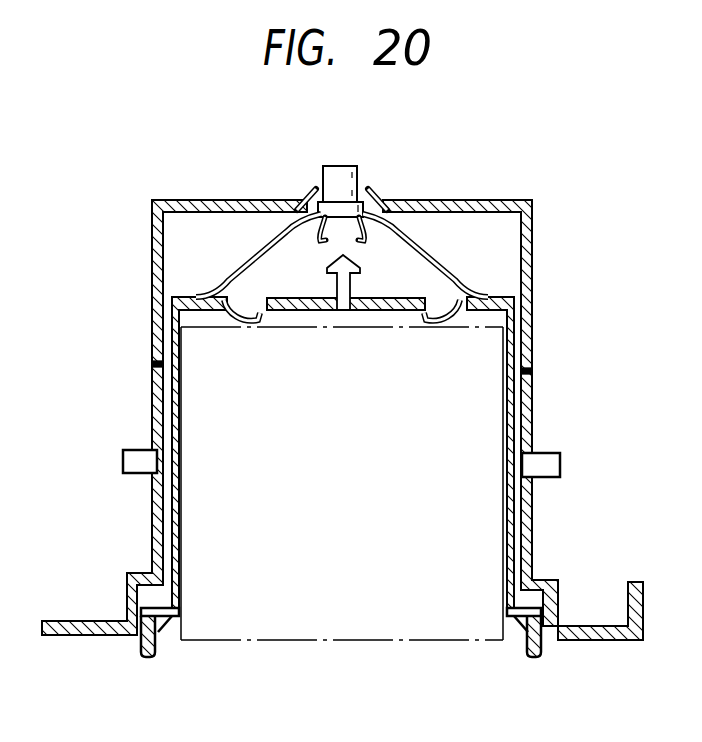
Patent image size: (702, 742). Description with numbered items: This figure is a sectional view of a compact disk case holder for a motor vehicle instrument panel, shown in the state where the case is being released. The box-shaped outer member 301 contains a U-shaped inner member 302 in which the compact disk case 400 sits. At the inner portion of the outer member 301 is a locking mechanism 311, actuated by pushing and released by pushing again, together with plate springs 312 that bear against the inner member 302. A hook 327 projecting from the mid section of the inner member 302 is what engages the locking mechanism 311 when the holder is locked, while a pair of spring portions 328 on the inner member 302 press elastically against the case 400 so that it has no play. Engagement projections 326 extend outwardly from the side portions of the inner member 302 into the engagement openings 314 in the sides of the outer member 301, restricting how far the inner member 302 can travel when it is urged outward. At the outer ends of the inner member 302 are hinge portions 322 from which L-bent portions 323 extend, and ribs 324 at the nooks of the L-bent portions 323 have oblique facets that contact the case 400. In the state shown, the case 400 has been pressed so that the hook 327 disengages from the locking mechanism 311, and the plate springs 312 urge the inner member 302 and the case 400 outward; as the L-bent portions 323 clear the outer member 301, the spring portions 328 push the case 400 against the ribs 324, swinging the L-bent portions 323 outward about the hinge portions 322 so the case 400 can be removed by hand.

The outer member 301 is at (533, 240).
The inner member 302 is at (503, 513).
The locking mechanism 311 is at (346, 166).
The plate spring 312 is at (428, 252).
The engagement opening 314 is at (155, 400).
The hinge portion 322 is at (173, 619).
The L-bent portion 323 is at (139, 645).
The rib 324 is at (160, 632).
The engagement projection 326 is at (123, 460).
The hook 327 is at (247, 262).
The spring portion 328 is at (450, 331).
The compact disk case 400 is at (318, 618).